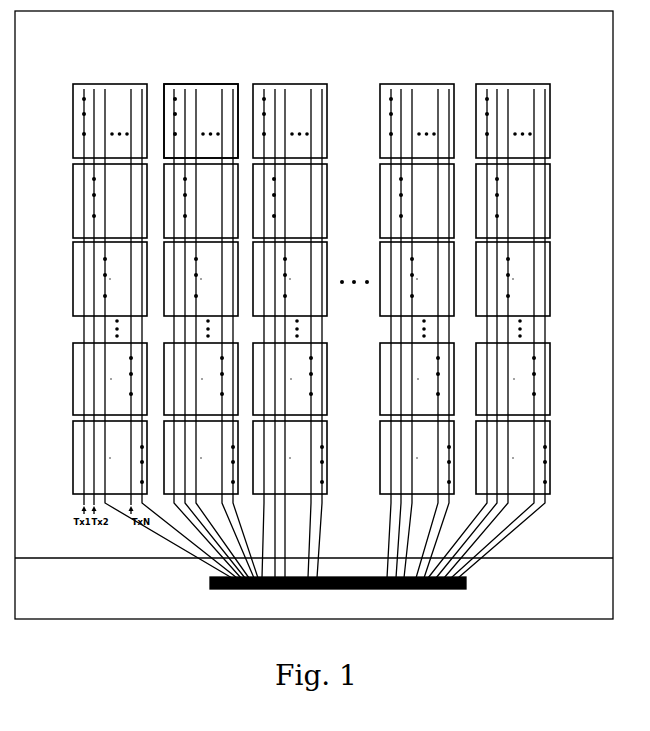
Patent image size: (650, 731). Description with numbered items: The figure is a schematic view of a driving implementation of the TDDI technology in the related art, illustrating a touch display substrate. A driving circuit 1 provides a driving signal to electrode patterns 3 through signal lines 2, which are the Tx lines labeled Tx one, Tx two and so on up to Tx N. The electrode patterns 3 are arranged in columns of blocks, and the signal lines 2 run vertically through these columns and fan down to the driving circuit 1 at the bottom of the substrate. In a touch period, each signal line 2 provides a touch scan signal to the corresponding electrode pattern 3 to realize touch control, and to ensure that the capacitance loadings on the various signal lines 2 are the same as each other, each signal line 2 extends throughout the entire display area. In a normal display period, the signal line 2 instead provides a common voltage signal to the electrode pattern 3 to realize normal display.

The driving circuit 1 is at (287, 589).
The signal line 2 is at (175, 93).
The electrode pattern 3 is at (239, 85).